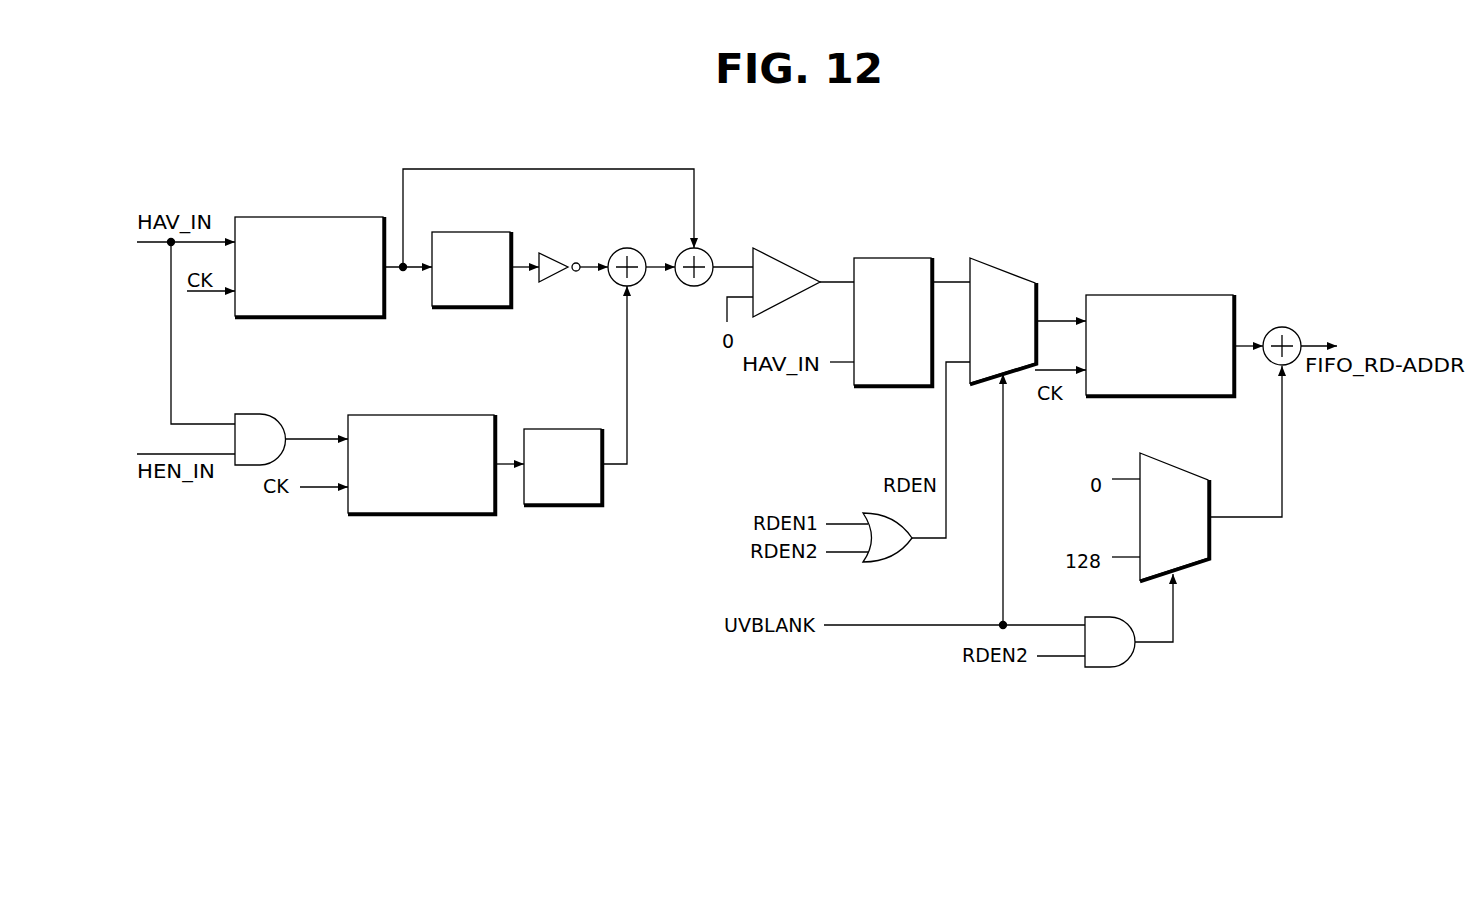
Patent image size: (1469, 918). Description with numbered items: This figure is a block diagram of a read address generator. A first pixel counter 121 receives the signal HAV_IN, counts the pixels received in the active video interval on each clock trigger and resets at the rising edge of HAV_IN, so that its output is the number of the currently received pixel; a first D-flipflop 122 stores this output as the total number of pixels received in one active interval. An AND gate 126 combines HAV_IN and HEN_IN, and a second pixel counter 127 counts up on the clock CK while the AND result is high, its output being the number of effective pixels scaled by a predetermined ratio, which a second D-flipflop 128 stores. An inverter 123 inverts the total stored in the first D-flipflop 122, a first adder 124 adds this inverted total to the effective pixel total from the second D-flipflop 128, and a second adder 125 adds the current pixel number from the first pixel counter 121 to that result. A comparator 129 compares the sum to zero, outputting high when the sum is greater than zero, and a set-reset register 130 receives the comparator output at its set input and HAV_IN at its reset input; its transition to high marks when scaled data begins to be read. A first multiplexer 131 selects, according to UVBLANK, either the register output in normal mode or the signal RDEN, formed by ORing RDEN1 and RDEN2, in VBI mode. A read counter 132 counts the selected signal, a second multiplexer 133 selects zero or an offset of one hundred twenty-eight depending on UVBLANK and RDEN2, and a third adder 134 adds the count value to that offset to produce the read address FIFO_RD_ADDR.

The first pixel counter 121 is at (303, 216).
The first D-flipflop 122 is at (480, 231).
The inverter 123 is at (548, 250).
The first adder 124 is at (627, 247).
The second adder 125 is at (704, 249).
The AND gate 126 is at (252, 412).
The second pixel counter 127 is at (427, 413).
The second D-flipflop 128 is at (573, 427).
The comparator 129 is at (775, 252).
The set-reset register 130 is at (901, 387).
The first multiplexer 131 is at (1010, 270).
The read counter 132 is at (1148, 294).
The second multiplexer 133 is at (1170, 463).
The third adder 134 is at (1282, 326).